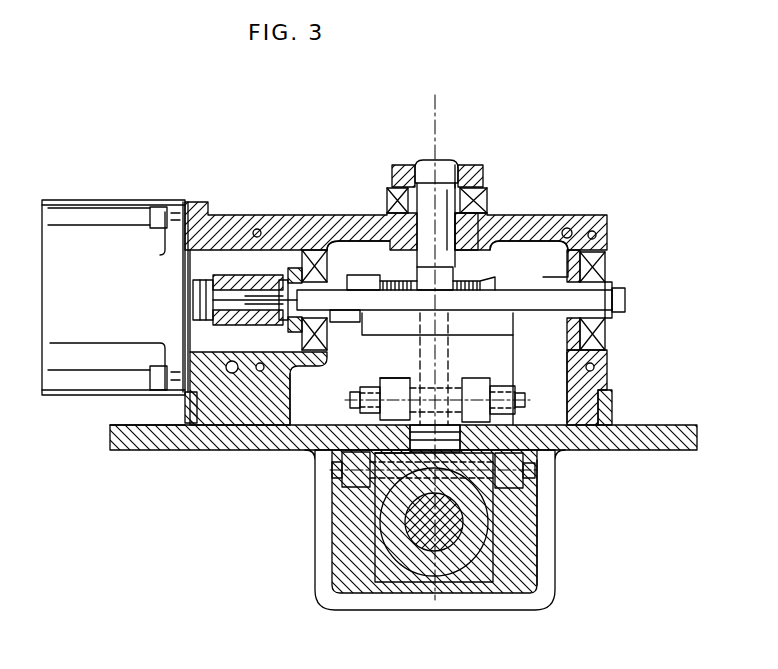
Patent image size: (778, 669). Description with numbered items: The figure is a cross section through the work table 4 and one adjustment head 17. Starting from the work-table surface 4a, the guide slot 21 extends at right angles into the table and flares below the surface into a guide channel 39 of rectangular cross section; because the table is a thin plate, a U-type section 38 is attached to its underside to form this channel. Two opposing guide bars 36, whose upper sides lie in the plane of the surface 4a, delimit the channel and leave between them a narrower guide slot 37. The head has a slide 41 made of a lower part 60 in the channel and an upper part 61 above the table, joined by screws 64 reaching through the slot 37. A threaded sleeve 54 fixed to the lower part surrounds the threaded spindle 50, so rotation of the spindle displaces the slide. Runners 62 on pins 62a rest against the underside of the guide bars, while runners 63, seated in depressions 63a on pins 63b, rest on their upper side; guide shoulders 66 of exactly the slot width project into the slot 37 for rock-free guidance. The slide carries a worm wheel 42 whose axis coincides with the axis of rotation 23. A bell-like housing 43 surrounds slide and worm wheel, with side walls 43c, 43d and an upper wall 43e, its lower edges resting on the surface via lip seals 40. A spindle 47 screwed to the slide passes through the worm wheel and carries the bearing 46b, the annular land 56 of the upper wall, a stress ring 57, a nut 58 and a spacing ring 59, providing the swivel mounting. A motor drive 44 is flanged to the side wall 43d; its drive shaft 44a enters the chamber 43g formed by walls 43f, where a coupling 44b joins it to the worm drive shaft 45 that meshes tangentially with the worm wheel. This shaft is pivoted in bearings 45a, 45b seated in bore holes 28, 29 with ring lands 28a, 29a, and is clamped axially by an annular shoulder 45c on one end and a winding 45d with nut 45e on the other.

The work table 4 is at (645, 447).
The work-table surface 4a is at (124, 428).
The adjustment head 17 is at (612, 212).
The guide slot 21 is at (355, 555).
The axis of rotation 23 is at (440, 123).
The bore hole 28 is at (565, 277).
The annular segment 28a is at (606, 262).
The bore hole 29 is at (330, 270).
The annular segment 29a is at (333, 347).
The guide bars 36 is at (332, 438).
The guide slot 37 is at (450, 388).
The U-type section 38 is at (553, 590).
The guide channel 39 is at (523, 548).
The lip seals 40 is at (613, 405).
The slide 41 is at (546, 402).
The worm wheel 42 is at (364, 262).
The housing 43 is at (306, 214).
The side wall 43c is at (600, 360).
The side wall 43d is at (212, 412).
The upper wall 43e is at (545, 228).
The walls 43f is at (292, 418).
The chamber 43g is at (205, 262).
The motor drive 44 is at (80, 228).
The drive shaft 44a is at (192, 301).
The coupling 44b is at (245, 282).
The worm drive shaft 45 is at (378, 296).
The bearing 45a is at (606, 270).
The bearing 45b is at (316, 262).
The annular shoulder 45c is at (627, 298).
The winding 45d is at (283, 320).
The nut 45e is at (293, 270).
The antifriction bearing 46b is at (486, 200).
The spindle 47 is at (458, 166).
The threaded spindle 50 is at (433, 548).
The threaded sleeve 54 is at (455, 558).
The annular land 56 is at (492, 247).
The stress ring 57 is at (482, 170).
The nut 58 is at (426, 168).
The spacing ring 59 is at (410, 187).
The lower part 60 is at (386, 575).
The upper part 61 is at (511, 346).
The runners 62 is at (357, 486).
The pins 62a is at (345, 496).
The runners 63 is at (380, 388).
The depressions 63a is at (395, 380).
The pins 63b is at (345, 400).
The screws 64 is at (445, 302).
The guide shoulders 66 is at (423, 452).